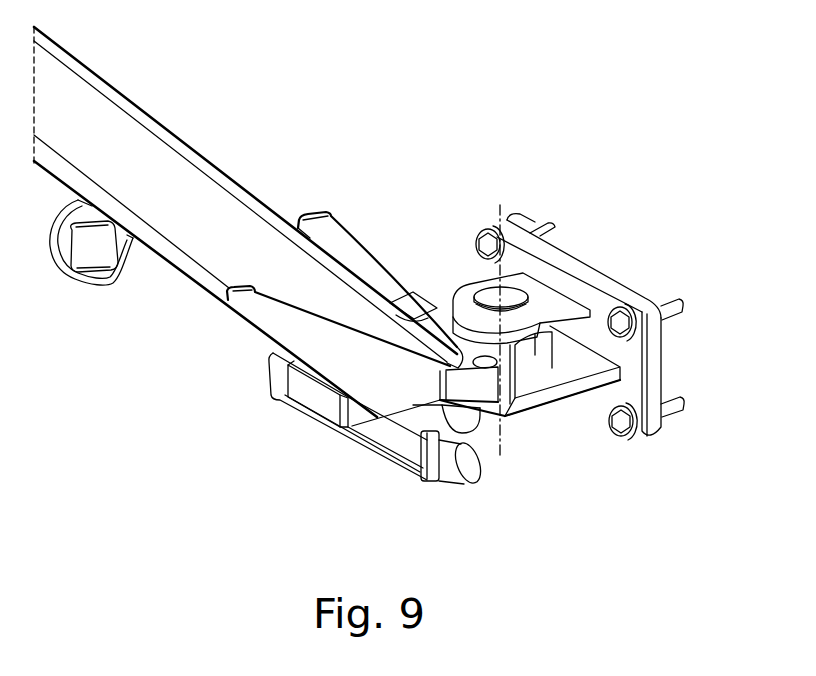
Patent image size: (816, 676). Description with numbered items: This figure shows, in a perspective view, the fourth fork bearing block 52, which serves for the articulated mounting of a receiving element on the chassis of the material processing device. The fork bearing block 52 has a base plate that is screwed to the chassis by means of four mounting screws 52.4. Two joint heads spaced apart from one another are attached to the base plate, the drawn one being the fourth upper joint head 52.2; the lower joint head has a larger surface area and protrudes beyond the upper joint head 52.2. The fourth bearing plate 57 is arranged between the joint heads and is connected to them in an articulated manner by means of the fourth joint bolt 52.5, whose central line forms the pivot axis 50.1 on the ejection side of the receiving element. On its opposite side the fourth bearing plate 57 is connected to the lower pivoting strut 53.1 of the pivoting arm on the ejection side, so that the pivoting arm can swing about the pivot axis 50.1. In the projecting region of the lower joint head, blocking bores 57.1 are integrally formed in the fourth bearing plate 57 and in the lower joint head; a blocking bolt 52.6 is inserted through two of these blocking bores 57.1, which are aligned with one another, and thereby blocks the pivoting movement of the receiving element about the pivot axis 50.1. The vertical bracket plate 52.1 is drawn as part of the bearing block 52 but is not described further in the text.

The pivot axis on the ejection side 50.1 is at (500, 205).
The fourth fork bearing block 52 is at (629, 292).
The vertical bracket plate 52.1 is at (620, 289).
The fourth upper joint head 52.2 is at (540, 297).
The mounting screws 52.4 is at (670, 298).
The fourth joint bolt 52.5 is at (512, 292).
The blocking bolt 52.6 is at (327, 230).
The lower pivoting strut 53.1 is at (120, 126).
The fourth bearing plate 57 is at (503, 334).
The blocking bores 57.1 is at (524, 340).